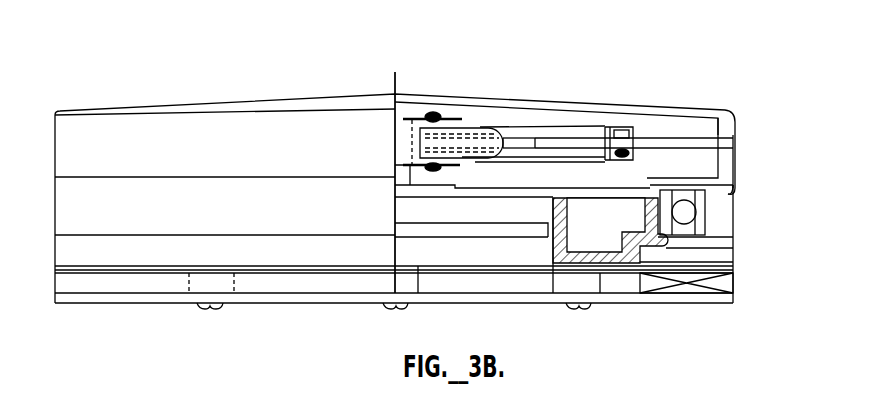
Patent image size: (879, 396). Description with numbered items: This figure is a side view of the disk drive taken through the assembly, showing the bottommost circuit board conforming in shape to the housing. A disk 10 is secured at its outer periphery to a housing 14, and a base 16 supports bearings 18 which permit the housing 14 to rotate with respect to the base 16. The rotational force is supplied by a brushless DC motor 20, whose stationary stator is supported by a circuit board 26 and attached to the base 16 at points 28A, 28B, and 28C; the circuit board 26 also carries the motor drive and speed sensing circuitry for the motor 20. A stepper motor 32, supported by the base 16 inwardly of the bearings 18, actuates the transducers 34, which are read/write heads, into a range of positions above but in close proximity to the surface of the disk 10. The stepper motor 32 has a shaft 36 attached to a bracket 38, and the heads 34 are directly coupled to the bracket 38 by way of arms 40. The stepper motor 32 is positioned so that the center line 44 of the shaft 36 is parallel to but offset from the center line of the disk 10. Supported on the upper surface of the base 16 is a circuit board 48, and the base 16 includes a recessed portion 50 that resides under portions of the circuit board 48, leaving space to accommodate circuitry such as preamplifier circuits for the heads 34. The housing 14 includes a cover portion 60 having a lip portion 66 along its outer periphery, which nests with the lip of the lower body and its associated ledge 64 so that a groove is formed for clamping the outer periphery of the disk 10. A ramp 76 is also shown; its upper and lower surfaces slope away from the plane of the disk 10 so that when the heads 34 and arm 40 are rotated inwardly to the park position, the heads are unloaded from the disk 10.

The disk 10 is at (572, 138).
The housing 14 is at (680, 108).
The base 16 is at (612, 270).
The bearings 18 is at (693, 228).
The brushless DC motor 20 is at (738, 268).
The circuit board 26 is at (307, 305).
The attachment point 28A is at (410, 306).
The attachment point 28B is at (590, 306).
The attachment point 28C is at (222, 306).
The stepper motor 32 is at (475, 253).
The transducers 34 is at (620, 128).
The shaft 36 is at (405, 178).
The bracket 38 is at (440, 118).
The arms 40 is at (528, 127).
The center line of shaft 44 is at (394, 90).
The circuit board 48 is at (503, 198).
The recessed portion 50 is at (618, 222).
The cover portion 60 is at (727, 127).
The ledge 64 is at (737, 187).
The lip portion 66 is at (733, 167).
The ramp 76 is at (497, 125).